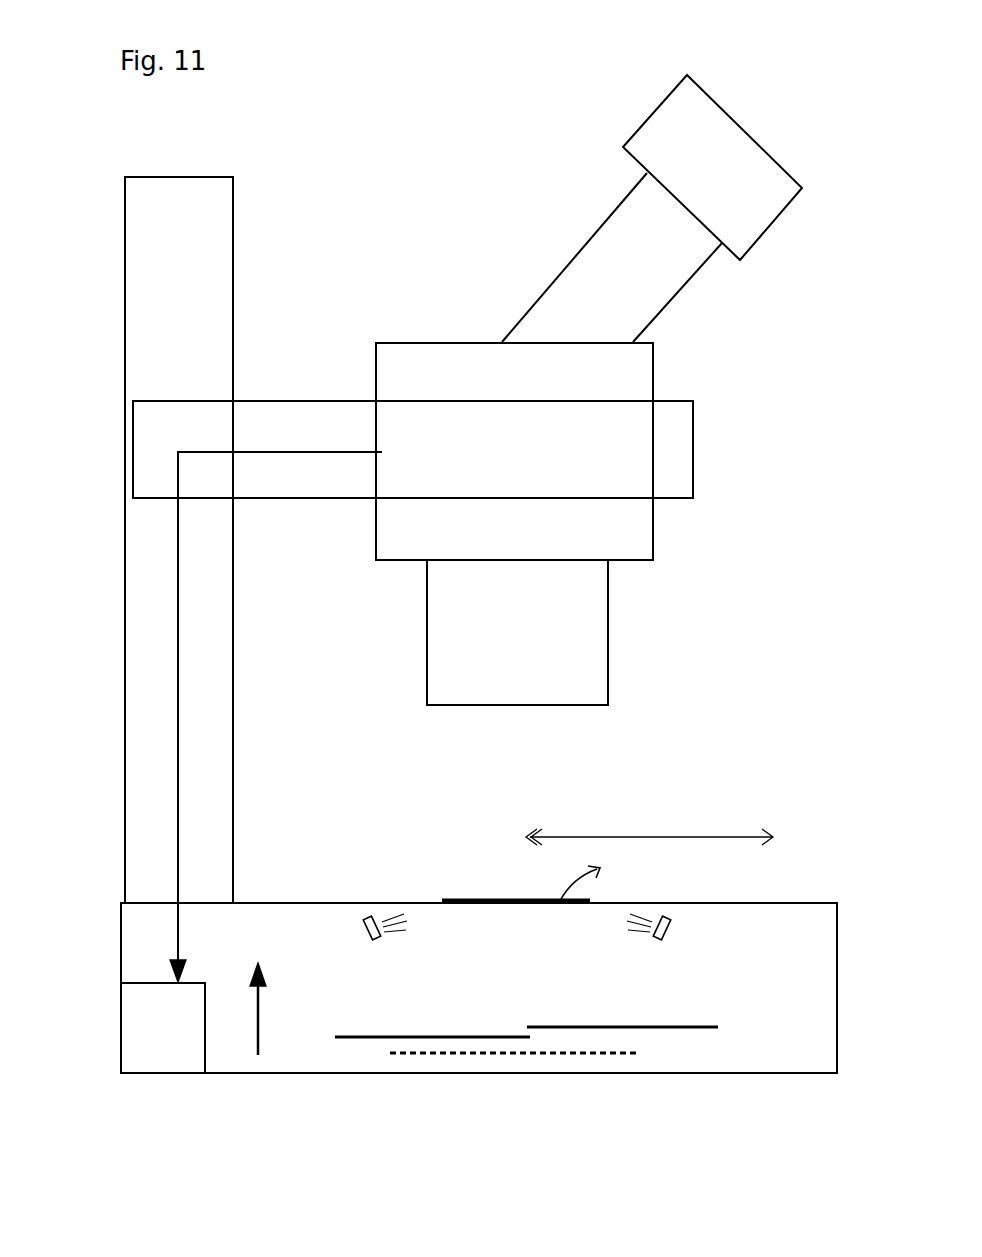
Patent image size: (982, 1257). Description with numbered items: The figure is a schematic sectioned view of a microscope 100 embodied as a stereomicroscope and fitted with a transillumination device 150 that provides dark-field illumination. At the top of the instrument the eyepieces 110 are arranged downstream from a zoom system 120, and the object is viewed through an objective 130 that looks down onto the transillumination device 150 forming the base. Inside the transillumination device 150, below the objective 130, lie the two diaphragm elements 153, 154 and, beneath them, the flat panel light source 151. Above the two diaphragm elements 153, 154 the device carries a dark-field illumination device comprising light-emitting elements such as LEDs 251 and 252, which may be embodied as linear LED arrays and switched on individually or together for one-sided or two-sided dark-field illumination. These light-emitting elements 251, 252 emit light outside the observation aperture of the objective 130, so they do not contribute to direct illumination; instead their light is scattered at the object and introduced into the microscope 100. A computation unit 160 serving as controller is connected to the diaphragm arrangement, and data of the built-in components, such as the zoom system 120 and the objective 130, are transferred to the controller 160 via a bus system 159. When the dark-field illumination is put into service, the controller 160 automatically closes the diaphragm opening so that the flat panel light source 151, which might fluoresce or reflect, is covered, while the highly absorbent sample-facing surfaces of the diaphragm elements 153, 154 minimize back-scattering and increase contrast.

The microscope 100 is at (334, 130).
The eyepieces 110 is at (778, 202).
The zoom system 120 is at (618, 518).
The objective 130 is at (578, 633).
The transillumination device 150 is at (132, 937).
The flat panel light source 151 is at (452, 1055).
The diaphragm element 153 is at (340, 1037).
The diaphragm element 154 is at (712, 1027).
The bus system 159 is at (175, 718).
The computation unit 160 is at (182, 1052).
The LED 251 is at (376, 940).
The LED 252 is at (656, 942).